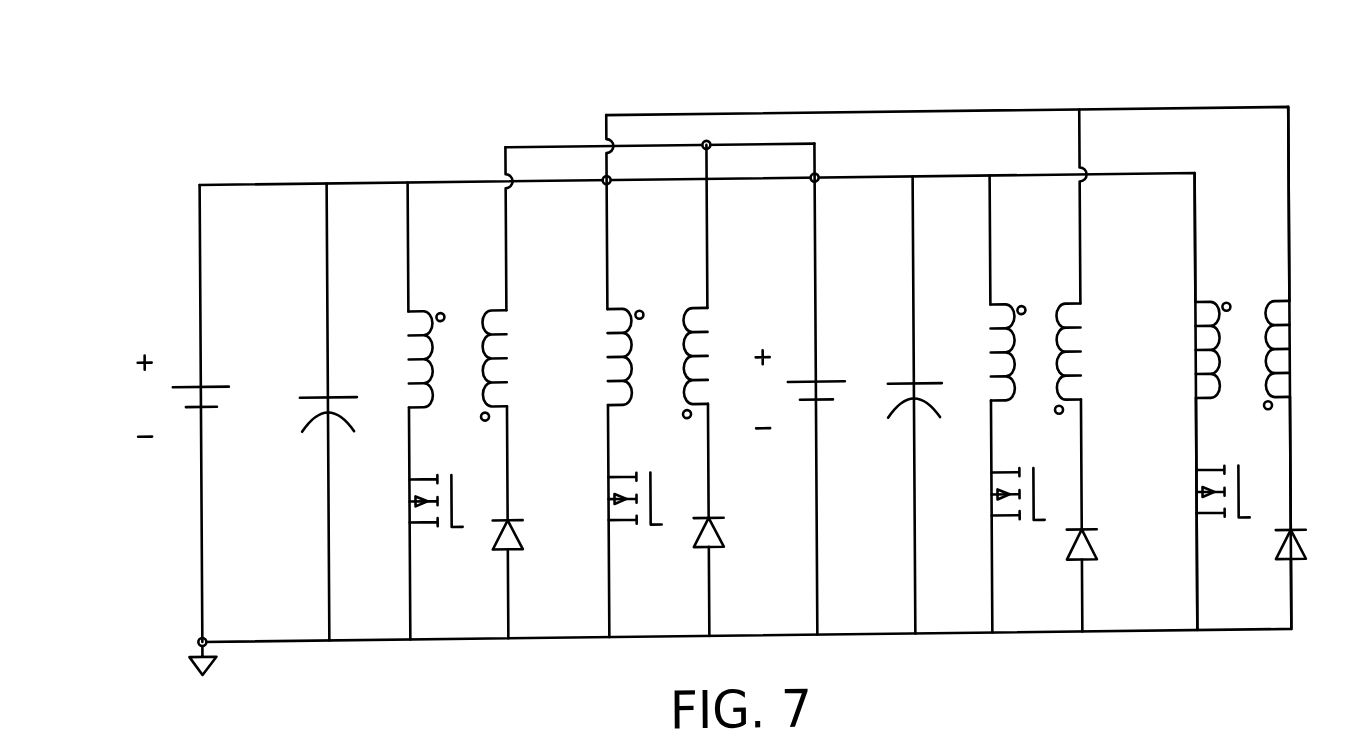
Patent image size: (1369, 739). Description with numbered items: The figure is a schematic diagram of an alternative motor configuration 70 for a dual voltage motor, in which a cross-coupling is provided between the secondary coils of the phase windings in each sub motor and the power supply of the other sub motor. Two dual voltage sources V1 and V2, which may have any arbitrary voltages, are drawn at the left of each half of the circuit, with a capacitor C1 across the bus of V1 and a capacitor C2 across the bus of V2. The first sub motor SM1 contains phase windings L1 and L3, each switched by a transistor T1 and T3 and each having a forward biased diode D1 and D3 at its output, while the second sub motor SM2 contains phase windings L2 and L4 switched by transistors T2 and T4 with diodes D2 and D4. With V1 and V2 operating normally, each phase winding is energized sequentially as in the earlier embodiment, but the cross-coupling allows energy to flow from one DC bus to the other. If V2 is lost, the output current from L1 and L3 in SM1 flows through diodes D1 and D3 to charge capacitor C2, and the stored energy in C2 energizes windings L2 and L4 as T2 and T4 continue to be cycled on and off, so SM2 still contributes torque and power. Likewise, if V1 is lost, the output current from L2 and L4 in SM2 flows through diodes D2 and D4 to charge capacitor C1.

The alternative motor configuration 70 is at (376, 86).
The voltage source V1 is at (179, 396).
The capacitor C1 is at (312, 439).
The phase winding L1 is at (438, 359).
The sub motor SM1 is at (587, 392).
The transistor T1 is at (414, 503).
The diode D1 is at (528, 555).
The phase winding L3 is at (657, 363).
The transistor T3 is at (614, 501).
The diode D3 is at (731, 551).
The voltage source V2 is at (796, 388).
The capacitor C2 is at (903, 427).
The phase winding L2 is at (1021, 352).
The sub motor SM2 is at (1168, 388).
The transistor T2 is at (996, 495).
The diode D2 is at (1105, 560).
The phase winding L4 is at (1242, 355).
The transistor T4 is at (1201, 494).
The diode D4 is at (1315, 557).